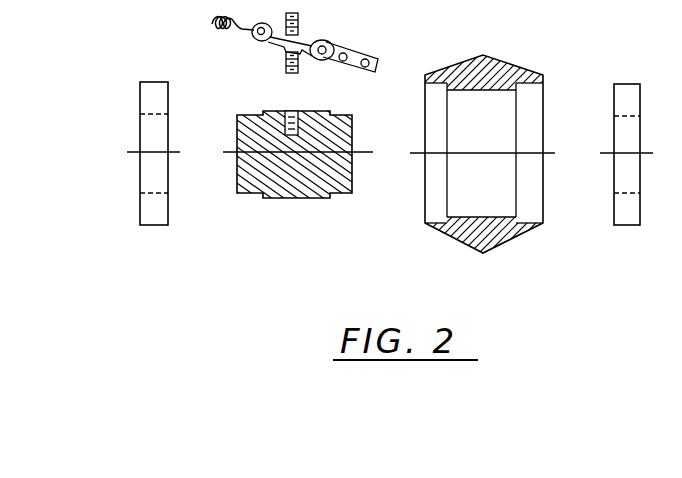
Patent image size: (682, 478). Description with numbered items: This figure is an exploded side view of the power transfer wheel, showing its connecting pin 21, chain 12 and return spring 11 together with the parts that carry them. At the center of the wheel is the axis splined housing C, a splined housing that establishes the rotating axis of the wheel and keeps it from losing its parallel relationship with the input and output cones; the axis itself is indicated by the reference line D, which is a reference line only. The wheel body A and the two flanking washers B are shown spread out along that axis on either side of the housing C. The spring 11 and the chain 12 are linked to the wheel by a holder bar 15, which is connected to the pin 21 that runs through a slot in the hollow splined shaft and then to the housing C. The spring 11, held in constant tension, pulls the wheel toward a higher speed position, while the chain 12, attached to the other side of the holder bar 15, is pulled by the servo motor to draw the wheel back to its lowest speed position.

The return spring 11 is at (212, 24).
The chain 12 is at (363, 56).
The holder bar 15 is at (312, 34).
The connecting pin 21 is at (286, 61).
The body A is at (505, 65).
The washer B is at (146, 226).
The axis splined housing C is at (297, 198).
The axis reference line D is at (130, 152).